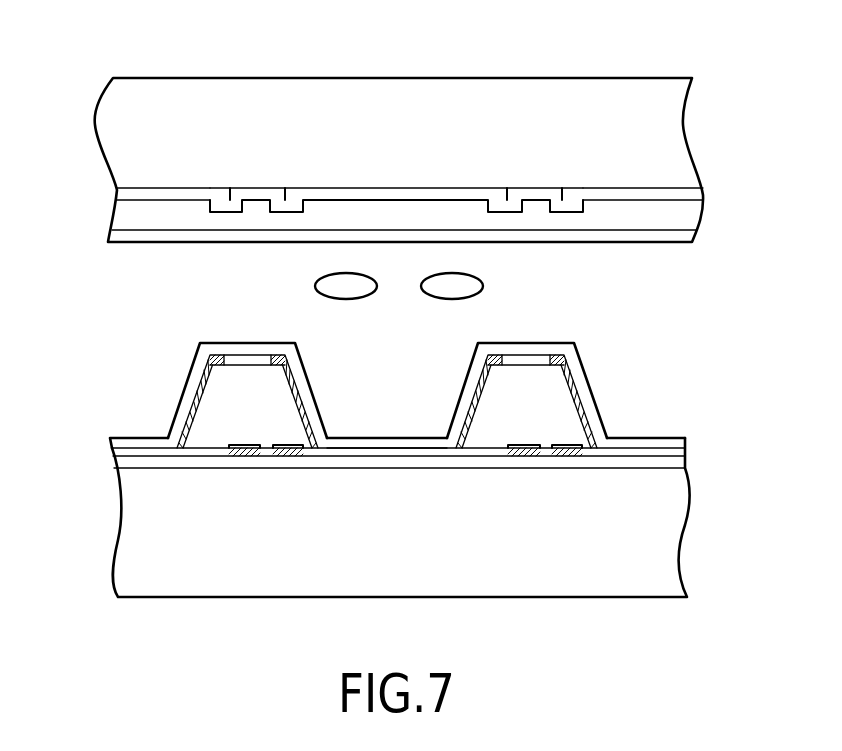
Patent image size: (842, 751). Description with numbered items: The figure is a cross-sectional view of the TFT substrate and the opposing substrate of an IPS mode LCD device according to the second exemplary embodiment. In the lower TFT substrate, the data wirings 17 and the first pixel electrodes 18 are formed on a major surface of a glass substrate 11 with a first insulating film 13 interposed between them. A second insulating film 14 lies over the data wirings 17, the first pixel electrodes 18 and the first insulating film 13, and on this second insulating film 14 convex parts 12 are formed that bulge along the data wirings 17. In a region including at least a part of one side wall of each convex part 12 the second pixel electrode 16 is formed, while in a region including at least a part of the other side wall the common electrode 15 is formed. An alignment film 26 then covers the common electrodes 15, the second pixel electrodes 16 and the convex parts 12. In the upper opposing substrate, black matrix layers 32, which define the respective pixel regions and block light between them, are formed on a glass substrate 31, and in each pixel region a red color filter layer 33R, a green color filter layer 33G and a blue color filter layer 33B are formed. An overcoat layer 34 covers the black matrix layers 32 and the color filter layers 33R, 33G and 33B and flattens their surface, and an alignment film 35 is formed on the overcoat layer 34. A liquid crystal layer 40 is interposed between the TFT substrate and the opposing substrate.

The glass substrate 11 is at (688, 487).
The convex part 12 is at (243, 383).
The first insulating film 13 is at (683, 455).
The second insulating film 14 is at (393, 450).
The common electrode 15 is at (208, 367).
The second pixel electrode 16 is at (292, 370).
The data wiring 17 is at (242, 458).
The first pixel electrode 18 is at (285, 458).
The alignment film 26 is at (678, 437).
The glass substrate 31 is at (683, 120).
The black matrix layer 32 is at (263, 193).
The red color filter layer 33R is at (117, 193).
The green color filter layer 33G is at (405, 193).
The blue color filter layer 33B is at (700, 193).
The overcoat layer 34 is at (700, 218).
The alignment film 35 is at (675, 237).
The liquid crystal layer 40 is at (362, 282).